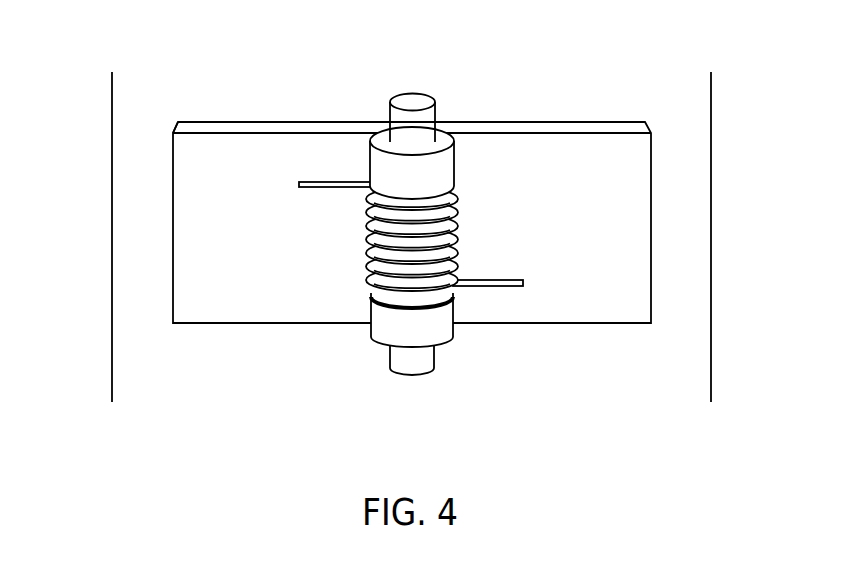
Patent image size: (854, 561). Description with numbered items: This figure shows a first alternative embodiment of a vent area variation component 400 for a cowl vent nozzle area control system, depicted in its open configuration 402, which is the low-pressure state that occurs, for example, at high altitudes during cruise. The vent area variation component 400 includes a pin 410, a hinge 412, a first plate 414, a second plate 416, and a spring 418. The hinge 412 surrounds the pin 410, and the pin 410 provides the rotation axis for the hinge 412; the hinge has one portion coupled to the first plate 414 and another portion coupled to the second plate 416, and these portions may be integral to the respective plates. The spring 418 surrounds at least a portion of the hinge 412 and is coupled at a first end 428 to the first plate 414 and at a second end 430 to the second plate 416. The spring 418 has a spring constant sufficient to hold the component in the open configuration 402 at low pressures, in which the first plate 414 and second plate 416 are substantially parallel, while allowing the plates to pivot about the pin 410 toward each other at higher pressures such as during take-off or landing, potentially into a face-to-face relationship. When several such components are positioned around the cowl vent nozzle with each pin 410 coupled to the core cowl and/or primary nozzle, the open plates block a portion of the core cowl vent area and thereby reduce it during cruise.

The vent area variation component 400 is at (608, 62).
The open configuration 402 is at (175, 108).
The pin 410 is at (413, 360).
The hinge 412 is at (432, 321).
The first plate 414 is at (615, 128).
The second plate 416 is at (277, 152).
The spring 418 is at (462, 220).
The first end 428 is at (507, 279).
The second end 430 is at (326, 190).